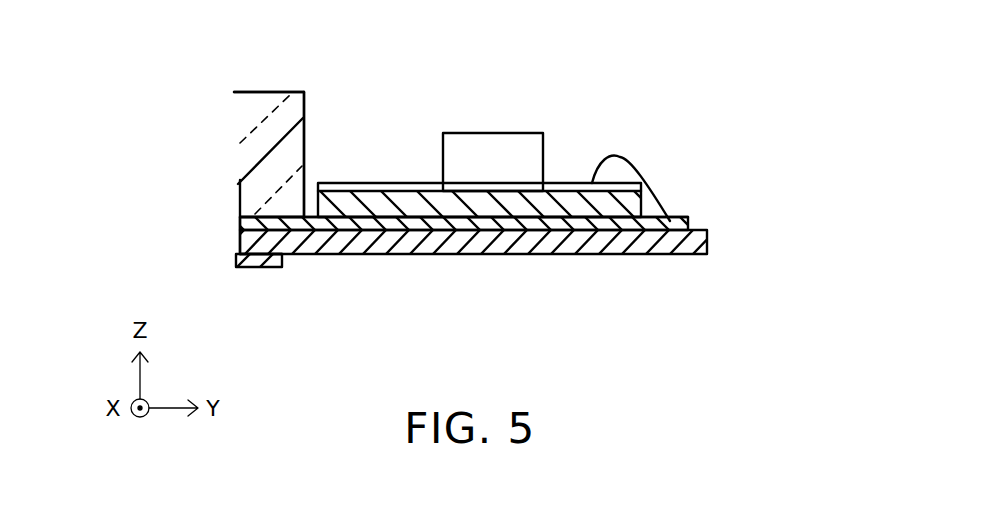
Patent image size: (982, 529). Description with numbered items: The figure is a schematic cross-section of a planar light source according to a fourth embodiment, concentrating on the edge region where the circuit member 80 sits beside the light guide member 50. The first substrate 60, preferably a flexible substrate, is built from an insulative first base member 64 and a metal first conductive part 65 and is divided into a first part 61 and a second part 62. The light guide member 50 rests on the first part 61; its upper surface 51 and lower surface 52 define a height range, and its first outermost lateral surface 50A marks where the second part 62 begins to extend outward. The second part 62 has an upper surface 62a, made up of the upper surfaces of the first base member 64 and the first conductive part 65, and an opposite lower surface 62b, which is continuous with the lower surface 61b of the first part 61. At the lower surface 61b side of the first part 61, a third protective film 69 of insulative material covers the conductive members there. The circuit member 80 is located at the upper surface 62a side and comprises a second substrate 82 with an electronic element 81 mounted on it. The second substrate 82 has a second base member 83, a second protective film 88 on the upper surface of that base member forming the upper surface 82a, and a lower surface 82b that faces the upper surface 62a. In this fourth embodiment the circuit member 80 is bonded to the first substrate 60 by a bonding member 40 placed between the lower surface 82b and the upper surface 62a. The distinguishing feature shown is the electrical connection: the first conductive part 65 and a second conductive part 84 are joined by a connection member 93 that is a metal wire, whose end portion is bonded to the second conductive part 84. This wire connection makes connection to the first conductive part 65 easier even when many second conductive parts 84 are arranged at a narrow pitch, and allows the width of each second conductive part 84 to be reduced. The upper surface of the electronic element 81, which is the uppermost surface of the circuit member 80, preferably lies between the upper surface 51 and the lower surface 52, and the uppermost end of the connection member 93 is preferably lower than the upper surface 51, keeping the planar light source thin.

The bonding member 40 is at (242, 221).
The light guide member 50 is at (247, 147).
The first outermost lateral surface 50A is at (305, 147).
The upper surface 51 is at (258, 92).
The lower surface 52 is at (258, 216).
The first substrate 60 is at (728, 247).
The first part 61 is at (242, 242).
The lower surface 61b is at (234, 93).
The second part 62 is at (490, 243).
The upper surface 62a is at (385, 215).
The lower surface 62b is at (368, 255).
The first base member 64 is at (538, 242).
The first conductive part 65 is at (581, 228).
The third protective film 69 is at (250, 254).
The circuit member 80 is at (569, 126).
The electronic element 81 is at (493, 158).
The second substrate 82 is at (476, 173).
The upper surface 82a is at (565, 185).
The lower surface 82b is at (404, 217).
The second base member 83 is at (417, 200).
The second conductive part 84 is at (598, 190).
The second protective film 88 is at (400, 188).
The connection member 93 is at (633, 162).